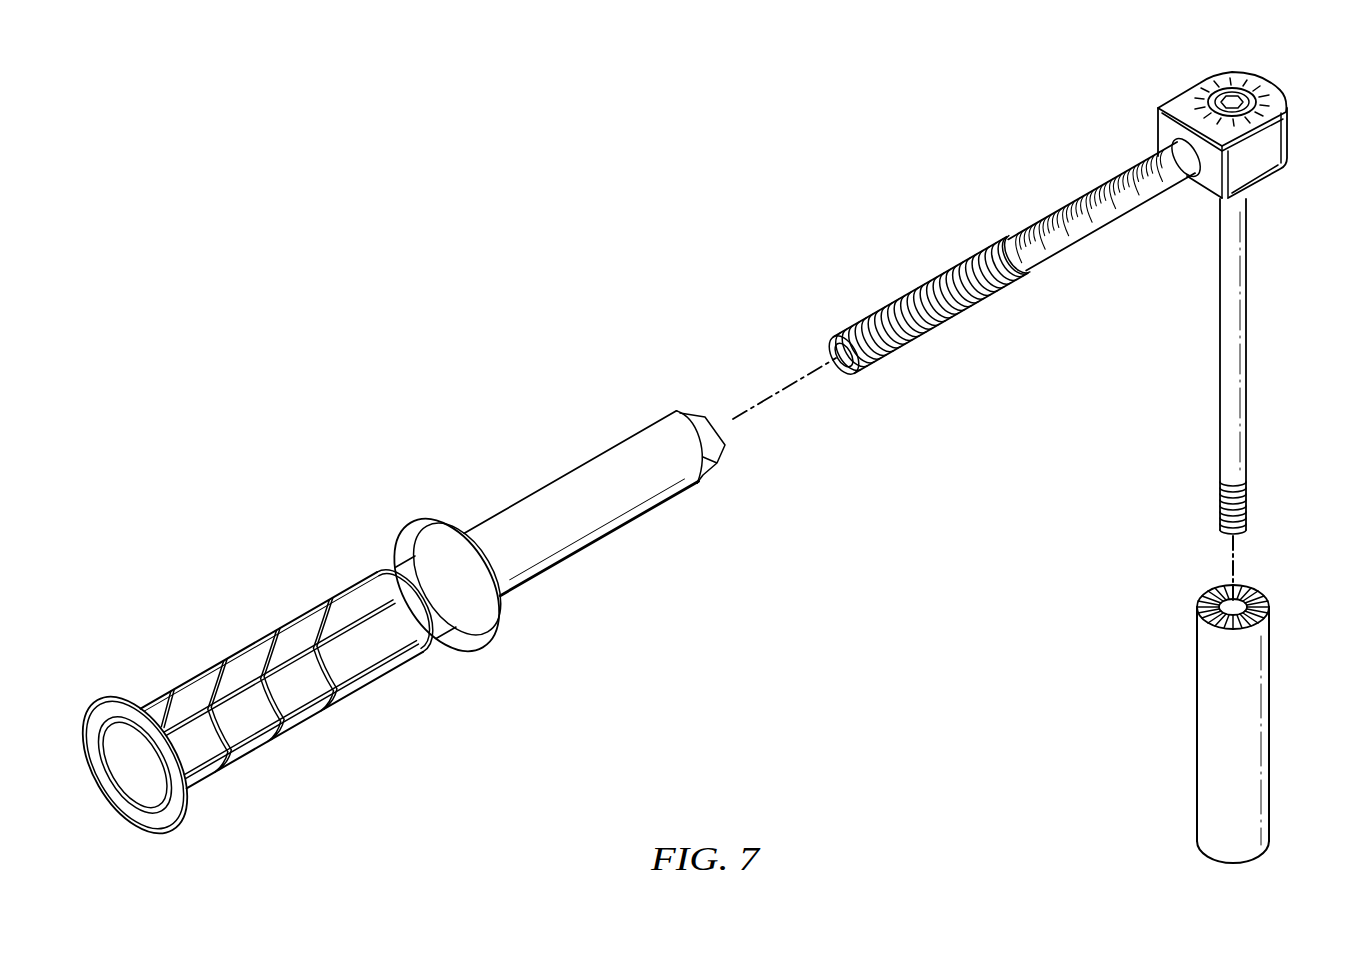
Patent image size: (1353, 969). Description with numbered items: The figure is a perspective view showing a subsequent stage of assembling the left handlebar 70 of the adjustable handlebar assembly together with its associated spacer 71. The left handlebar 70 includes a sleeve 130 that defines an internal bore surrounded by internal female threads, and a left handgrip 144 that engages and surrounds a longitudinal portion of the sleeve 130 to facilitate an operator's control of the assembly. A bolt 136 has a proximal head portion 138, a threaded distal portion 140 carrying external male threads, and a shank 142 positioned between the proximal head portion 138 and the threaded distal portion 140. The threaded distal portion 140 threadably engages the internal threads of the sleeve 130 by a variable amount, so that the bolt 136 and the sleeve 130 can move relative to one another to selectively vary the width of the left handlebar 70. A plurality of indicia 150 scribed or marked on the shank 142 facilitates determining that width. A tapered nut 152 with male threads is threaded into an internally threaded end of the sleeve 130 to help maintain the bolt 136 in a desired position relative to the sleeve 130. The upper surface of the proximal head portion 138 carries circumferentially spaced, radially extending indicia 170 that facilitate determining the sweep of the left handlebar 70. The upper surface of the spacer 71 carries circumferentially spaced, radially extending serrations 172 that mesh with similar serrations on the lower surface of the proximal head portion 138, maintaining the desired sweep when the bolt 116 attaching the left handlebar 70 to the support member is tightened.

The left handlebar 70 is at (536, 486).
The spacer 71 is at (1259, 701).
The bolt 116 is at (1248, 333).
The sleeve 130 is at (605, 462).
The bolt 136 is at (1005, 251).
The proximal head portion 138 is at (1294, 133).
The threaded distal portion 140 is at (902, 295).
The shank 142 is at (1090, 228).
The left handgrip 144 is at (262, 652).
The indicia 150 is at (1085, 185).
The tapered nut 152 is at (686, 410).
The indicia 170 is at (1205, 77).
The serrations 172 is at (1252, 588).